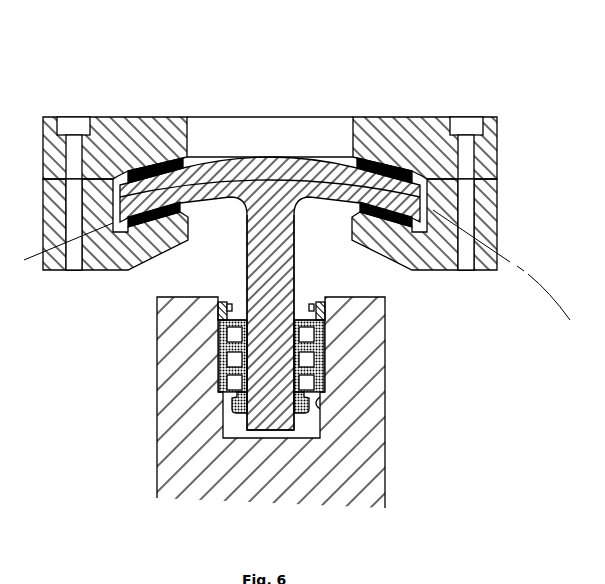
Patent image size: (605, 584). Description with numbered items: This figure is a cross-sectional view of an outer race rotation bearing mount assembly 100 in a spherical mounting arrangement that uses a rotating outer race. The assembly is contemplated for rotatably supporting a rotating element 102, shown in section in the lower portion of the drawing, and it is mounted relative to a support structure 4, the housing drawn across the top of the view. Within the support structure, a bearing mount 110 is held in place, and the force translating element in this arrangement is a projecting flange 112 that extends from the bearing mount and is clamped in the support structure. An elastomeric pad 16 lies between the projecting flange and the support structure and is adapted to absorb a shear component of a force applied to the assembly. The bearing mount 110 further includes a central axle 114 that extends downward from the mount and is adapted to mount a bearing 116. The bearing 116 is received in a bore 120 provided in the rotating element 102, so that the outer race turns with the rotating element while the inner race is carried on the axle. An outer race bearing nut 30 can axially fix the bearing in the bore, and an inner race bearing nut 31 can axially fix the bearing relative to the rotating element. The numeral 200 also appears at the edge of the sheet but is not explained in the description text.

The outer race rotation bearing mount assembly 100 is at (436, 70).
The support structure 4 is at (500, 133).
The projecting flange 112 is at (420, 193).
The bearing mount 110 is at (274, 190).
The central axle 114 is at (295, 282).
The elastomeric pad 16 is at (138, 200).
The rotating element 102 is at (157, 425).
The outer race bearing nut 30 is at (218, 313).
The bearing 116 is at (308, 338).
The inner race bearing nut 31 is at (302, 403).
The bore 120 is at (322, 400).
The assembly 200 is at (546, 580).